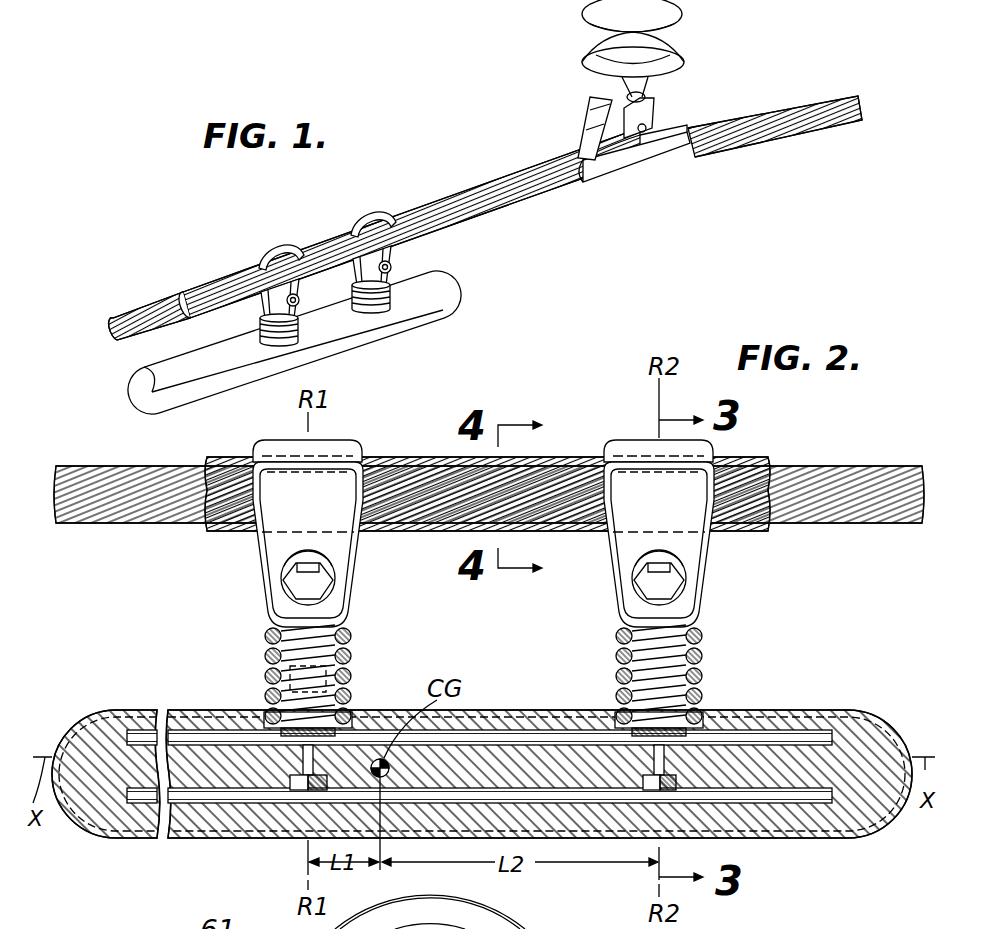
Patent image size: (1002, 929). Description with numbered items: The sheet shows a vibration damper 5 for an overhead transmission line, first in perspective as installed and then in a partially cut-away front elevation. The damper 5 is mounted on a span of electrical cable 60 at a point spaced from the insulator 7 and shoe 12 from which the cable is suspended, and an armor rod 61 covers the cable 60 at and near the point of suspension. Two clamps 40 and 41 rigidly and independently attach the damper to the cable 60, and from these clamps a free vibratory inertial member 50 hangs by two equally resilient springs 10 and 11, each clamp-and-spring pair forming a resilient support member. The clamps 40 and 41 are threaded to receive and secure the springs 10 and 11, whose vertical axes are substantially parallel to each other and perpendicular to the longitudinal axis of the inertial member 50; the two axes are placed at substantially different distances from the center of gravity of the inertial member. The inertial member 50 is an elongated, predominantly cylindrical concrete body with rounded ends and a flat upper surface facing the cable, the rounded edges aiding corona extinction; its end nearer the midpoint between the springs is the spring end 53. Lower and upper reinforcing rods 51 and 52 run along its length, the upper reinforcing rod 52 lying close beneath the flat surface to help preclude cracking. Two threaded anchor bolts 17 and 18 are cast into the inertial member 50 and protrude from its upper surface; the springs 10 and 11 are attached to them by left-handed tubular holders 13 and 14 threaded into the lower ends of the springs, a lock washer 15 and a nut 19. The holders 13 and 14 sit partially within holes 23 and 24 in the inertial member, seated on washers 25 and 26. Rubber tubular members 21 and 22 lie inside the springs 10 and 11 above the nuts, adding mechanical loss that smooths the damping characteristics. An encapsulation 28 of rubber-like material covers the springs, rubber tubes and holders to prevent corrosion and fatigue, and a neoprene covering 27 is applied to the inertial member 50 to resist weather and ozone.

In FIG. 1, the vibration damper 5 is at (472, 282).
In FIG. 1, the insulator 7 is at (685, 19).
In FIG. 1, the shoe 12 is at (590, 109).
In FIG. 1, the electrical cable 60 is at (152, 308).
In FIG. 2, the electrical cable 60 is at (172, 522).
In FIG. 1, the armor rod 61 is at (488, 192).
In FIG. 2, the armor rod 61 is at (234, 530).
In FIG. 1, the clamp 40 is at (275, 257).
In FIG. 2, the clamp 40 is at (340, 557).
In FIG. 1, the clamp 41 is at (366, 223).
In FIG. 2, the clamp 41 is at (690, 563).
In FIG. 2, the spring 10 is at (268, 640).
In FIG. 2, the spring 11 is at (620, 642).
In FIG. 2, the rubber tubular member 21 is at (268, 659).
In FIG. 2, the rubber tubular member 22 is at (700, 665).
In FIG. 2, the holder 13 is at (268, 687).
In FIG. 2, the holder 14 is at (622, 690).
In FIG. 2, the nut 19 is at (350, 660).
In FIG. 2, the lock washer 15 is at (350, 687).
In FIG. 2, the encapsulation 28 is at (700, 642).
In FIG. 2, the hole 23 is at (266, 714).
In FIG. 2, the hole 24 is at (706, 706).
In FIG. 2, the washer 25 is at (283, 726).
In FIG. 2, the washer 26 is at (645, 727).
In FIG. 2, the anchor bolt 17 is at (303, 760).
In FIG. 2, the anchor bolt 18 is at (667, 768).
In FIG. 2, the inertial member 50 is at (876, 824).
In FIG. 2, the lower reinforcing rod 51 is at (138, 798).
In FIG. 2, the upper reinforcing rod 52 is at (147, 732).
In FIG. 2, the spring end 53 is at (880, 708).
In FIG. 2, the covering 27 is at (224, 842).